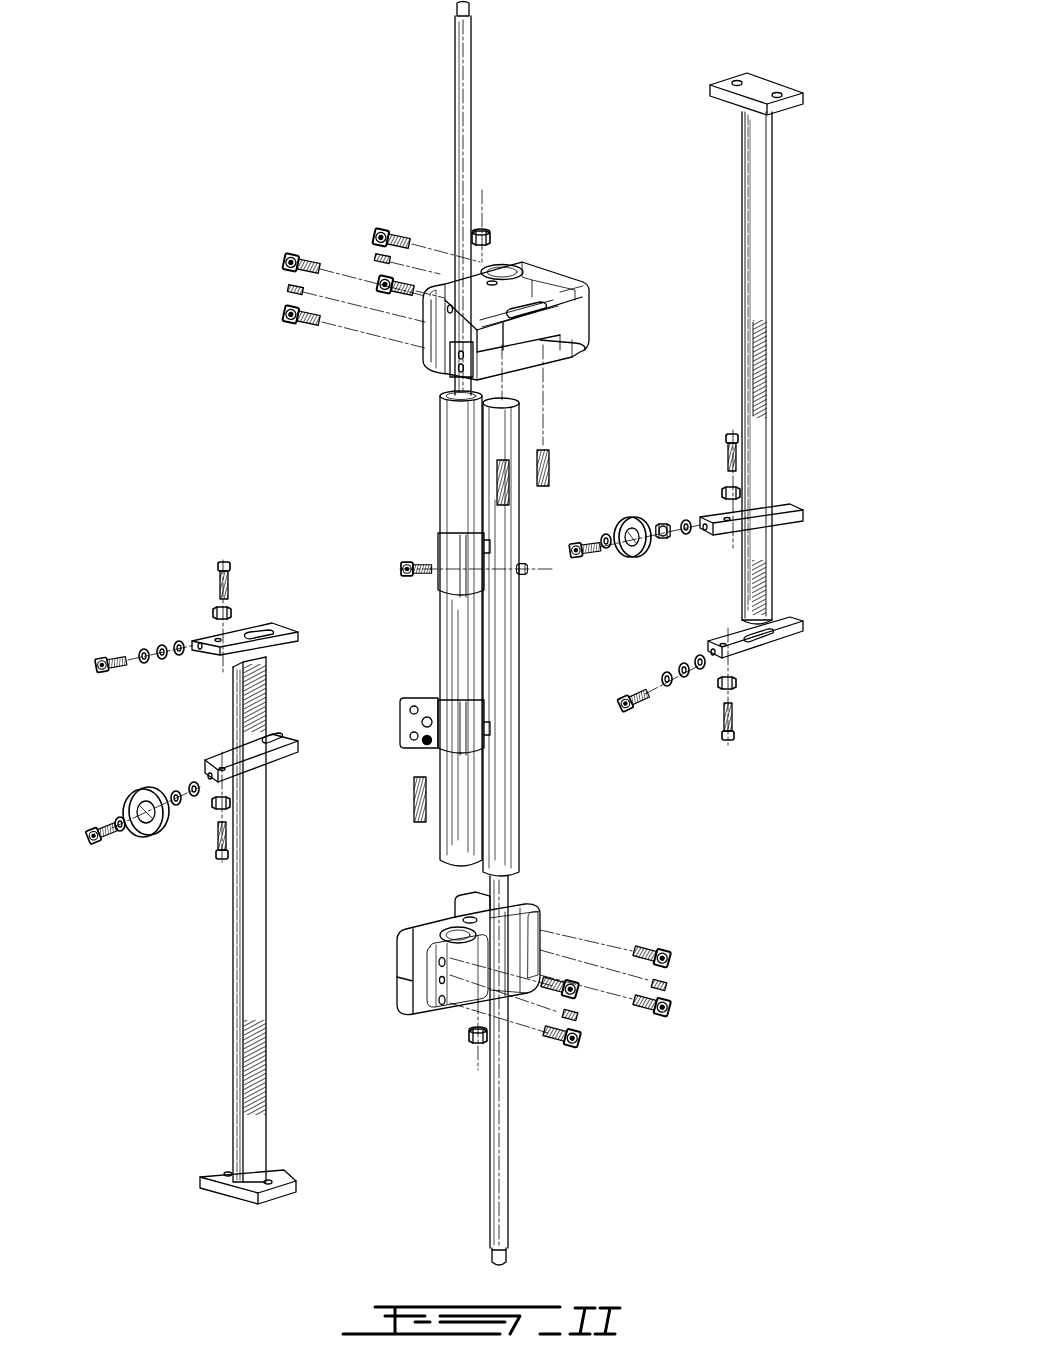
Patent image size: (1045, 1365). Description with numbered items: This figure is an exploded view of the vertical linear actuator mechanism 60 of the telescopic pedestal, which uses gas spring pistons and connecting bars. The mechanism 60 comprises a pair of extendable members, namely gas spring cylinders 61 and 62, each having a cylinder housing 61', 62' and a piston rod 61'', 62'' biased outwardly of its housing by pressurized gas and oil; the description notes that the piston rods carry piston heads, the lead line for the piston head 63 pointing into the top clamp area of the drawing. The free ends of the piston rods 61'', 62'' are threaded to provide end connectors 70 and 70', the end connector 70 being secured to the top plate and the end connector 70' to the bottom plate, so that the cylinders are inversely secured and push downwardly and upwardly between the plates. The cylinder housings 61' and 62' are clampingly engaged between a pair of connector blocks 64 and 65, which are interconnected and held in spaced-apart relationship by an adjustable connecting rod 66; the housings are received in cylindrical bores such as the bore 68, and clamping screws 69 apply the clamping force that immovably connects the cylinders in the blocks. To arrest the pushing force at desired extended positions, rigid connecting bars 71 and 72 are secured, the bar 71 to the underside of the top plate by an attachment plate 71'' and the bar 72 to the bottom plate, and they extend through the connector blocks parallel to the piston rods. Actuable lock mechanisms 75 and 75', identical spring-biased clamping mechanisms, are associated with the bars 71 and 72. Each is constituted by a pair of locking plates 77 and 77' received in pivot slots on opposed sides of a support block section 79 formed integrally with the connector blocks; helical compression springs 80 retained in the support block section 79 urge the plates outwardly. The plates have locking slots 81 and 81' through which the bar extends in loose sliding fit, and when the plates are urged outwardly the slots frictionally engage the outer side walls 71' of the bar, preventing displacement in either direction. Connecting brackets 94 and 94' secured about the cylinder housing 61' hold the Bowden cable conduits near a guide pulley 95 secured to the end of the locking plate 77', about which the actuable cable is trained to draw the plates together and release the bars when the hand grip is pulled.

The vertical linear actuator mechanism 60 is at (268, 434).
The gas spring cylinder 61 is at (411, 747).
The cylinder housing 61' is at (416, 628).
The piston rod 61'' is at (416, 205).
The gas spring cylinder 62 is at (551, 680).
The cylinder housing 62' is at (561, 636).
The piston rod 62'' is at (561, 1062).
The channel in top clamp 63 is at (586, 325).
The connector block 64 is at (590, 291).
The connector block 65 is at (538, 906).
The adjustable connecting rod 66 is at (448, 320).
The cylindrical bore 68 is at (505, 270).
The clamping screws 69 is at (383, 283).
The end connector 70 is at (415, 22).
The end connector 70' is at (554, 1246).
The connecting bar 71 is at (799, 368).
The outer side walls 71' is at (708, 360).
The attachment plate 71'' is at (801, 116).
The connecting bar 72 is at (265, 968).
The actuable lock mechanism 75 is at (714, 472).
The actuable lock mechanism 75' is at (191, 696).
The locking plate 77 is at (792, 530).
The locking plate 77' is at (755, 669).
The support block section 79 is at (556, 336).
The helical compression springs 80 is at (510, 499).
The locking slot 81 is at (550, 446).
The locking slot 81' is at (305, 774).
The connecting bracket 94 is at (430, 694).
The connecting bracket 94' is at (443, 545).
The guide pulley 95 is at (148, 836).